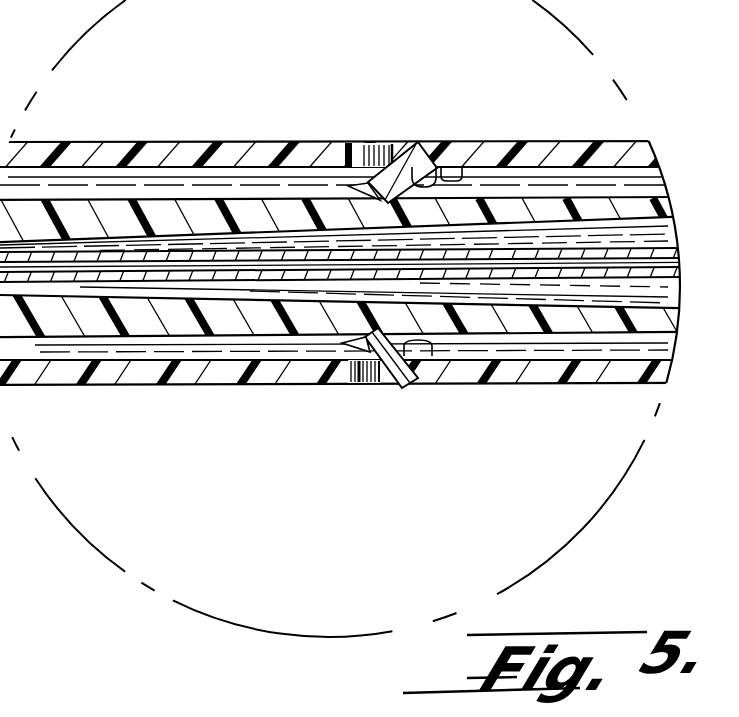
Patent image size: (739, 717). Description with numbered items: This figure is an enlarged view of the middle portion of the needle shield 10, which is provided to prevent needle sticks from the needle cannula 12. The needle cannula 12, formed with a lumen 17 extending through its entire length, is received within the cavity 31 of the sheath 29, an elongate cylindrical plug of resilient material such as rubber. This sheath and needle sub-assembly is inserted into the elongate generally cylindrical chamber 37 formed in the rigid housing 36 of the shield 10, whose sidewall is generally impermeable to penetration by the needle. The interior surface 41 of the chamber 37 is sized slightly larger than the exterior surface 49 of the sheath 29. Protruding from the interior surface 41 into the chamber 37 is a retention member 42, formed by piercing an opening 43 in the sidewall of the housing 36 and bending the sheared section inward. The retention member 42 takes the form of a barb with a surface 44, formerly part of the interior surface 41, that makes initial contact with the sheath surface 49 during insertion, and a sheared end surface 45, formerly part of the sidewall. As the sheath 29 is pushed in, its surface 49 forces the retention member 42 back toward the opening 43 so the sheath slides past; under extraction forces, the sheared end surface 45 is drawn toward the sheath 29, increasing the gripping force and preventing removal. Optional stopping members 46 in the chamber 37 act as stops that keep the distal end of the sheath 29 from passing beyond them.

The needle shield 10 is at (170, 138).
The needle cannula 12 is at (642, 300).
The lumen 17 is at (612, 265).
The sheath 29 is at (530, 350).
The cavity 31 is at (607, 238).
The housing 36 is at (604, 142).
The chamber 37 is at (180, 196).
The interior surface 41 is at (463, 170).
The retention member 42 is at (399, 146).
The opening 43 is at (361, 152).
The surface 44 is at (435, 168).
The sheared end surface 45 is at (367, 199).
The stopping members 46 is at (240, 347).
The exterior surface 49 is at (482, 335).